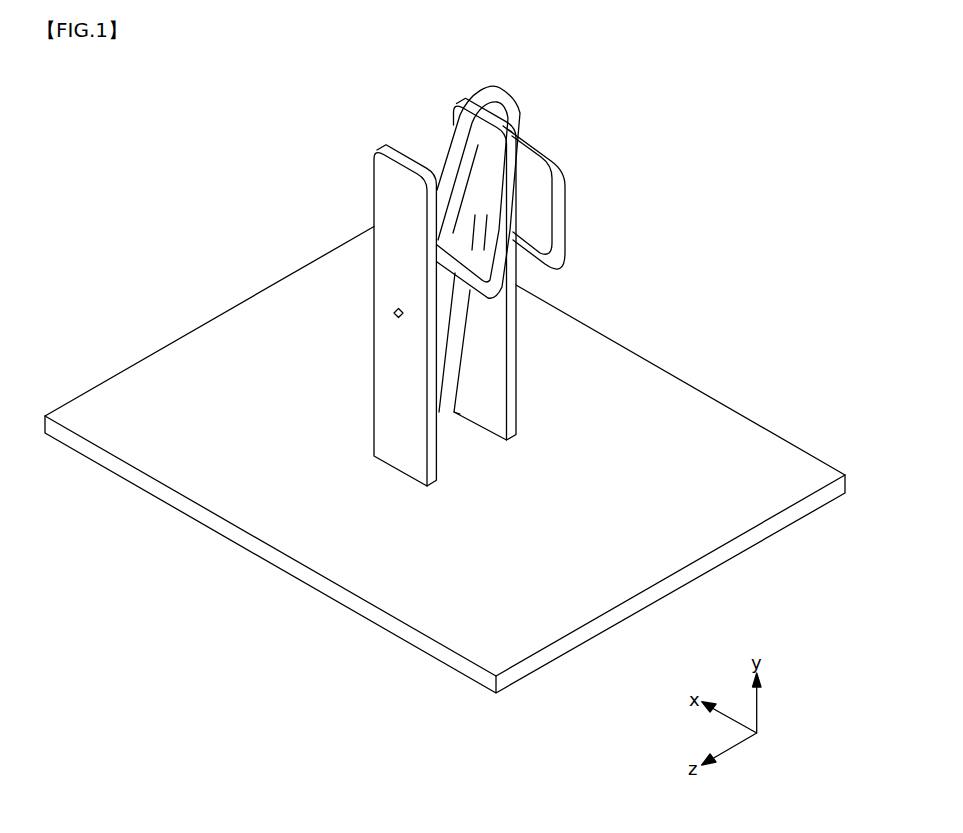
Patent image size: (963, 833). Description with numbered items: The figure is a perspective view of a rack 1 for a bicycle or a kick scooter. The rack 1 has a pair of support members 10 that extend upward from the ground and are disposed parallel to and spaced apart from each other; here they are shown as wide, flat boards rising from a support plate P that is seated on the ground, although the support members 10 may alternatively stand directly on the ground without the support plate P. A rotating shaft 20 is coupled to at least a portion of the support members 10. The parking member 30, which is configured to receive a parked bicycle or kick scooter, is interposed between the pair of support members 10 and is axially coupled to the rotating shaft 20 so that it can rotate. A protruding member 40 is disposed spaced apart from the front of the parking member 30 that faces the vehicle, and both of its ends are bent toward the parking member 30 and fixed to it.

The rack 1 is at (342, 383).
The support member 10 is at (399, 147).
The rotating shaft 20 is at (393, 312).
The parking member 30 is at (513, 100).
The protruding member 40 is at (559, 188).
The support plate P is at (173, 470).